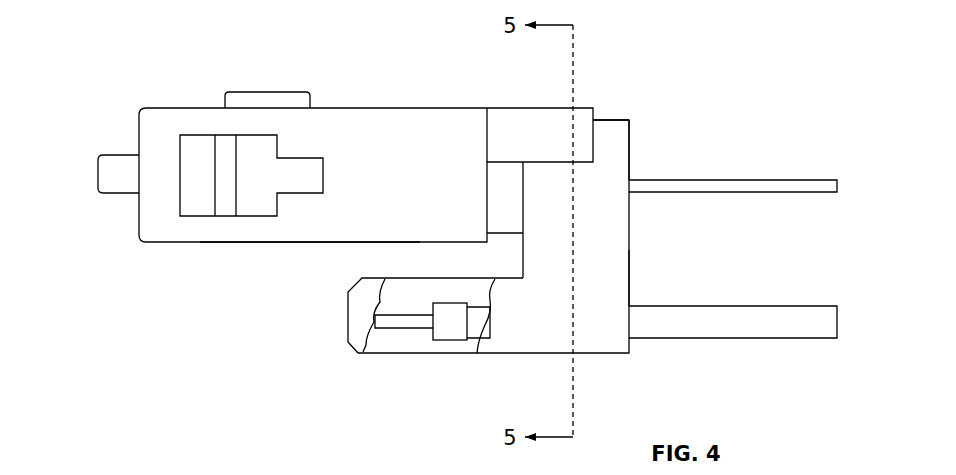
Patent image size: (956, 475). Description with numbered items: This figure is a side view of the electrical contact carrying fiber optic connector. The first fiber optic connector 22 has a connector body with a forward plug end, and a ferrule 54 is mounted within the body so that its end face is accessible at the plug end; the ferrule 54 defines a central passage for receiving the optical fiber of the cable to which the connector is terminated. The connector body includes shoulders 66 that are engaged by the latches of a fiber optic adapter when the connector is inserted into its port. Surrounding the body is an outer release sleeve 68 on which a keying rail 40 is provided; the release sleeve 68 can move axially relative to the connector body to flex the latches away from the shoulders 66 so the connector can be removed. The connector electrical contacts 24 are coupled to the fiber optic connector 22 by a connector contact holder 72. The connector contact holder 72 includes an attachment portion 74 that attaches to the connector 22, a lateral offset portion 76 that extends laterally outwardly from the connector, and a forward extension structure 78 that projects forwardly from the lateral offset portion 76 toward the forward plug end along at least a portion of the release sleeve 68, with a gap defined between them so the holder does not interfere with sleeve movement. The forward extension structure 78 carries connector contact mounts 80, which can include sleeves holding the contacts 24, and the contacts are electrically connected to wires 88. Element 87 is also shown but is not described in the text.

The first fiber optic connector 22 is at (369, 106).
The connector electrical contacts 24 is at (401, 327).
The keying rail 40 is at (267, 92).
The ferrule 54 is at (116, 197).
The shoulders 66 is at (223, 207).
The release sleeve 68 is at (301, 246).
The connector contact holder 72 is at (633, 262).
The attachment portion 74 is at (631, 148).
The lateral offset portion 76 is at (631, 290).
The forward extension structure 78 is at (492, 356).
The connector contact mounts 80 is at (392, 356).
The upper tab 87 is at (765, 178).
The wires 88 is at (771, 342).